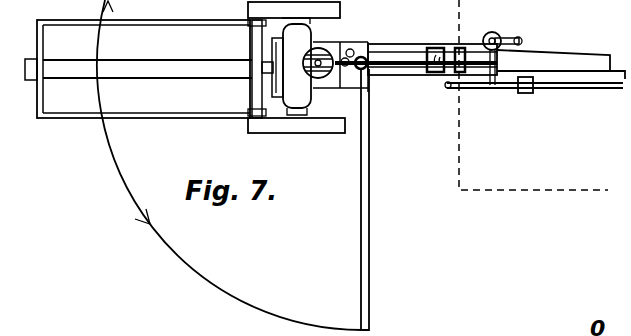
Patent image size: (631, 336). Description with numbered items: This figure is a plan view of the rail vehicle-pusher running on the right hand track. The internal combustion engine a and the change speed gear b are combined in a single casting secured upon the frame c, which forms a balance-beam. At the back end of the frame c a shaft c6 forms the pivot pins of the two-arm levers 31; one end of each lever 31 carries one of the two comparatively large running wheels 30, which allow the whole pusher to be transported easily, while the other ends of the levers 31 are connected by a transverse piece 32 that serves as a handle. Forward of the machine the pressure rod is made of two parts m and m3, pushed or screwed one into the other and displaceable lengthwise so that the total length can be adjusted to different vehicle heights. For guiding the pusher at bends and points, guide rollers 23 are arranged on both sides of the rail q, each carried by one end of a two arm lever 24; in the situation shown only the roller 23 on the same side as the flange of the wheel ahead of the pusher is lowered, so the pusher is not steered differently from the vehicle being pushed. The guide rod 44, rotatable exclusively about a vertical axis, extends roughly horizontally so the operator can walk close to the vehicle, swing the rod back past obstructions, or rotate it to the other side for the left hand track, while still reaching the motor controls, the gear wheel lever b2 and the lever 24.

The two-arm levers 31 is at (171, 20).
The transverse piece 32 is at (42, 45).
The running wheels 30 is at (258, 120).
The frame c is at (256, 63).
The shaft c6 is at (258, 90).
The internal combustion engine a is at (305, 42).
The change speed gear b is at (350, 49).
The gear wheel lever b2 is at (360, 44).
The guide rod 44 is at (370, 212).
The pressure rod part m is at (395, 61).
The pressure rod part m3 is at (458, 50).
The guide rollers 23 is at (493, 32).
The two arm lever 24 is at (521, 39).
The rail q is at (586, 59).